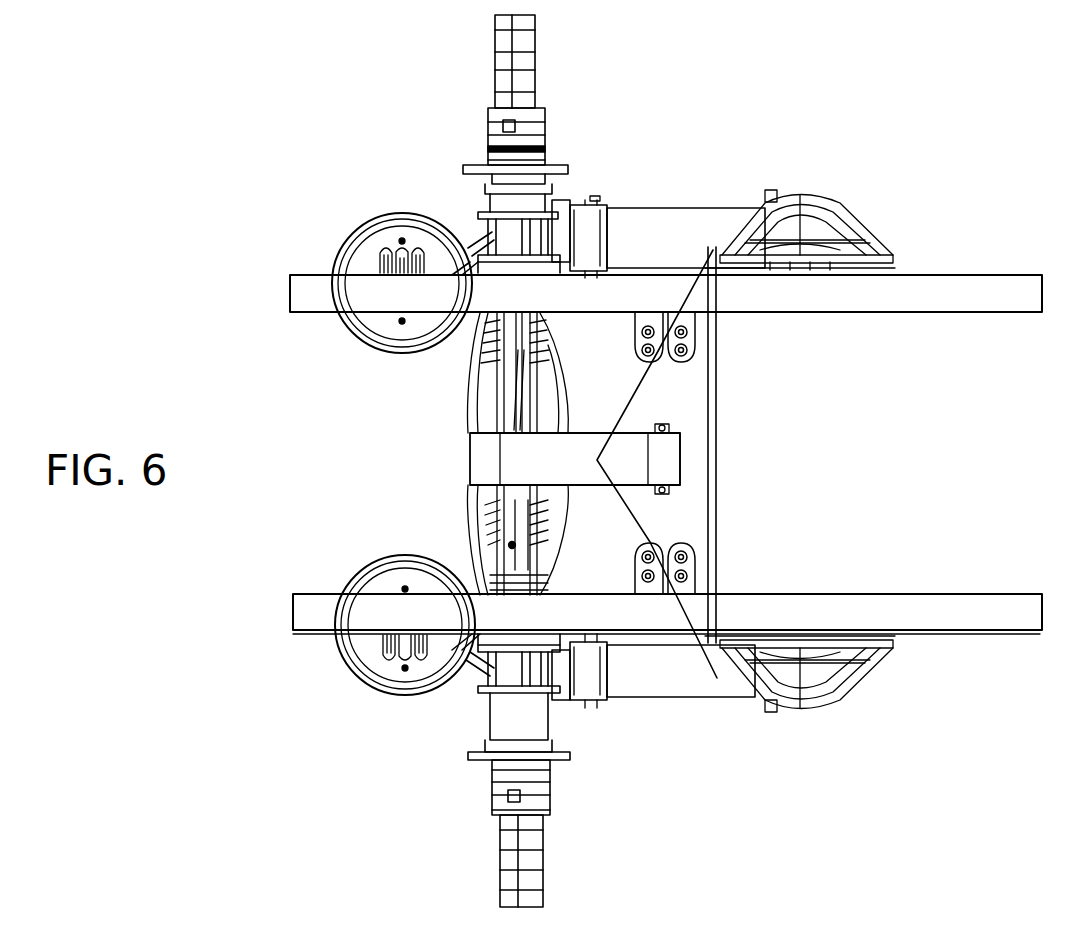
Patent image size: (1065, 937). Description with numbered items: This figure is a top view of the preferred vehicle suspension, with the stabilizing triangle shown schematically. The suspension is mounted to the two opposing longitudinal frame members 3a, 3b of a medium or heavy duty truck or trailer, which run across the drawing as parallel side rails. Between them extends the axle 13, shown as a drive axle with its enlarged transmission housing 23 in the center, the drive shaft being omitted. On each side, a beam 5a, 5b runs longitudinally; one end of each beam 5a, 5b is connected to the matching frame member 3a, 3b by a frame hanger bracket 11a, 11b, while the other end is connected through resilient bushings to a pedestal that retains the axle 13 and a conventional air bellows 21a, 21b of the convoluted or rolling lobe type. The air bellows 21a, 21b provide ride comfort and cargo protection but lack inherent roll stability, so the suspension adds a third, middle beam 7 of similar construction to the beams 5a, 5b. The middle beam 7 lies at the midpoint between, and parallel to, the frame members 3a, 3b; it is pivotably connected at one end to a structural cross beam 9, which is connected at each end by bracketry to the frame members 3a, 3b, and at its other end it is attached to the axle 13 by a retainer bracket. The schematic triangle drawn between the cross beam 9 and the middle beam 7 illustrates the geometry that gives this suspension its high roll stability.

The longitudinal frame member 3a is at (930, 294).
The longitudinal frame member 3b is at (947, 614).
The beam 5a is at (672, 250).
The beam 5b is at (677, 677).
The middle beam 7 is at (588, 475).
The structural cross beam 9 is at (695, 403).
The frame hanger bracket 11a is at (857, 218).
The frame hanger bracket 11b is at (862, 688).
The axle 13 is at (538, 841).
The air bellows 21a is at (350, 339).
The air bellows 21b is at (353, 673).
The transmission housing 23 is at (553, 401).